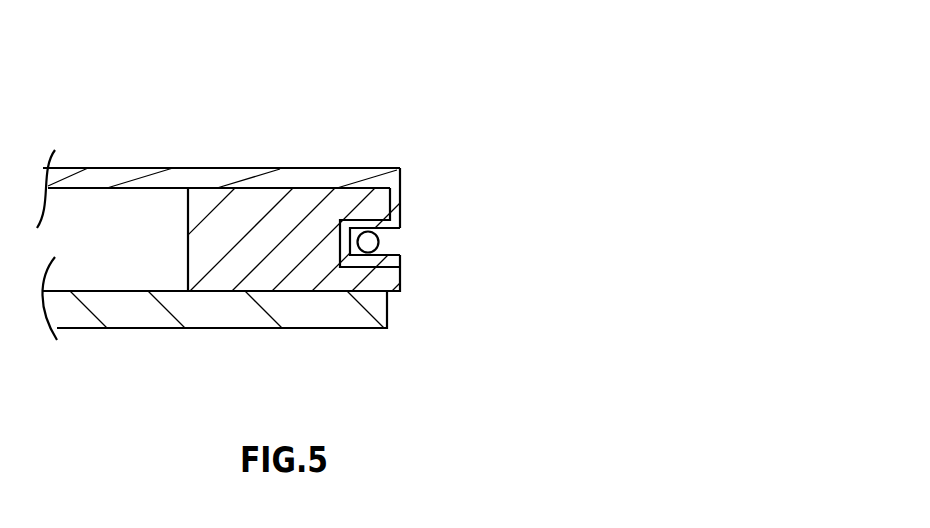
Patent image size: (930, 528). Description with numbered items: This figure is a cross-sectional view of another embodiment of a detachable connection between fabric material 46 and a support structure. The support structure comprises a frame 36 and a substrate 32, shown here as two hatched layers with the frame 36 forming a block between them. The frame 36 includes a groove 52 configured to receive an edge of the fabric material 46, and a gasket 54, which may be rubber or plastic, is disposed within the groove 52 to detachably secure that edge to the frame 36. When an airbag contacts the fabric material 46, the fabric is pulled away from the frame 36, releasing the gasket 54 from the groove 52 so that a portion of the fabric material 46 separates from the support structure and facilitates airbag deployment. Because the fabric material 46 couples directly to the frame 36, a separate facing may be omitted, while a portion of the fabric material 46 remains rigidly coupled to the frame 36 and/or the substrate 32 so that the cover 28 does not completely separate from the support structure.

The cover 28 is at (497, 129).
The substrate 32 is at (140, 313).
The frame 36 is at (197, 254).
The fabric material 46 is at (192, 181).
The groove 52 is at (343, 255).
The gasket 54 is at (370, 242).